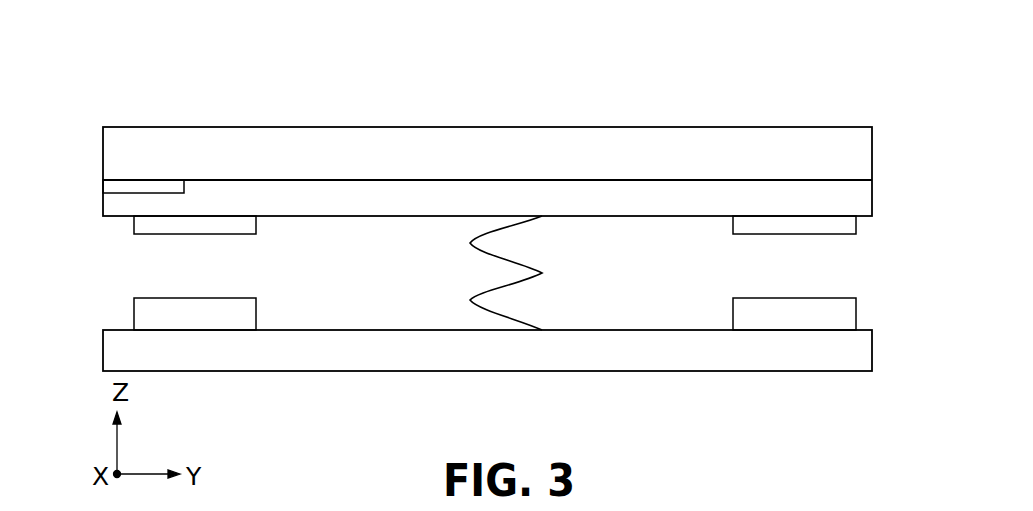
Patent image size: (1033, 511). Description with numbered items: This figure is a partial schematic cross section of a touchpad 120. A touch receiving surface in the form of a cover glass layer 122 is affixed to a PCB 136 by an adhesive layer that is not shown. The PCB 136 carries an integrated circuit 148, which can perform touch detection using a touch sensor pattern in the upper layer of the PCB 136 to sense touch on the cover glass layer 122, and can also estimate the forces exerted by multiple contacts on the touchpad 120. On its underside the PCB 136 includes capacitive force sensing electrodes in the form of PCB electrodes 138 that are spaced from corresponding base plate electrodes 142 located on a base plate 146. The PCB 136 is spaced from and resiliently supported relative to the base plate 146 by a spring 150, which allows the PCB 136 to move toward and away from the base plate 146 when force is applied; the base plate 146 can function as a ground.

The touchpad 120 is at (152, 61).
The cover glass layer 122 is at (874, 166).
The PCB 136 is at (103, 205).
The integrated circuit 148 is at (105, 186).
The PCB electrodes 138 is at (230, 234).
The base plate electrodes 142 is at (152, 297).
The base plate 146 is at (103, 357).
The spring 150 is at (470, 300).